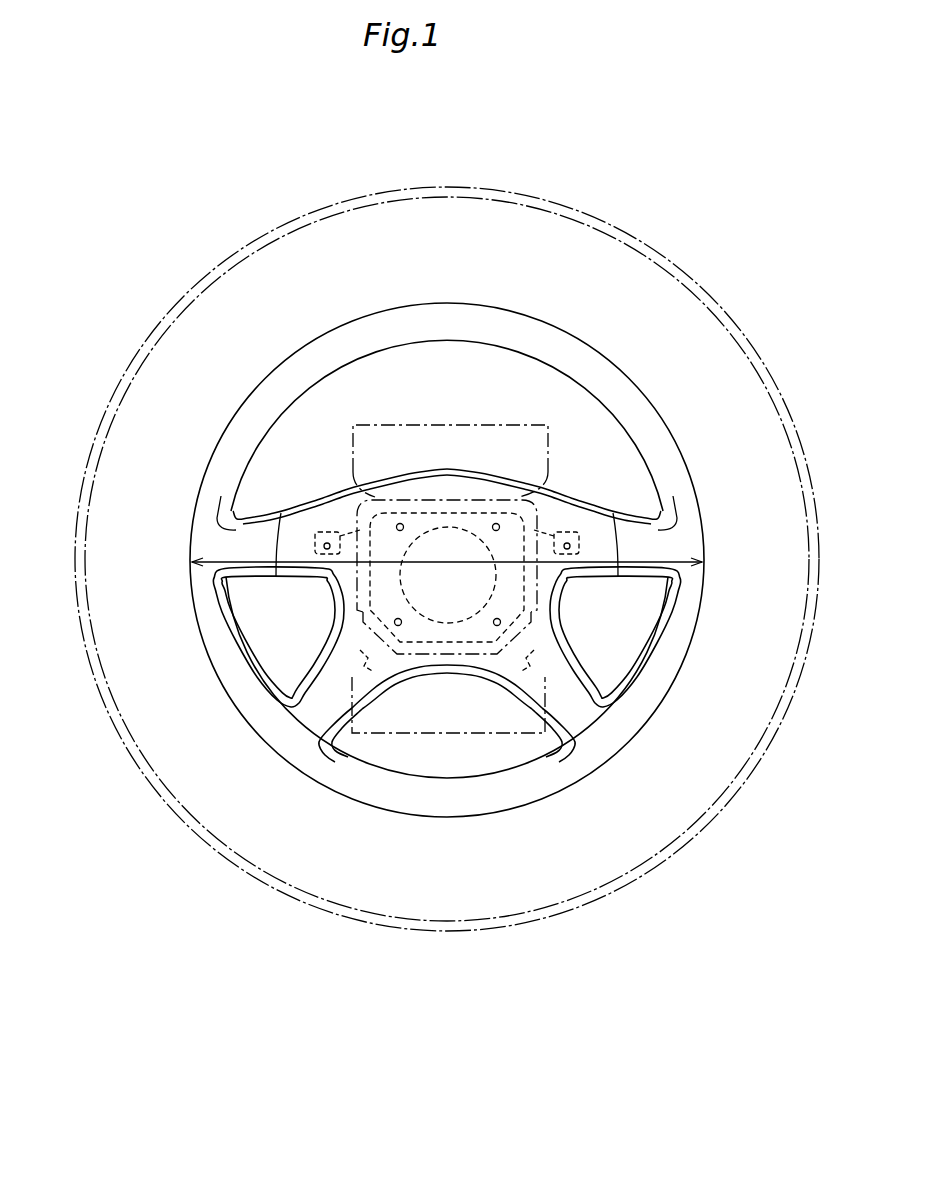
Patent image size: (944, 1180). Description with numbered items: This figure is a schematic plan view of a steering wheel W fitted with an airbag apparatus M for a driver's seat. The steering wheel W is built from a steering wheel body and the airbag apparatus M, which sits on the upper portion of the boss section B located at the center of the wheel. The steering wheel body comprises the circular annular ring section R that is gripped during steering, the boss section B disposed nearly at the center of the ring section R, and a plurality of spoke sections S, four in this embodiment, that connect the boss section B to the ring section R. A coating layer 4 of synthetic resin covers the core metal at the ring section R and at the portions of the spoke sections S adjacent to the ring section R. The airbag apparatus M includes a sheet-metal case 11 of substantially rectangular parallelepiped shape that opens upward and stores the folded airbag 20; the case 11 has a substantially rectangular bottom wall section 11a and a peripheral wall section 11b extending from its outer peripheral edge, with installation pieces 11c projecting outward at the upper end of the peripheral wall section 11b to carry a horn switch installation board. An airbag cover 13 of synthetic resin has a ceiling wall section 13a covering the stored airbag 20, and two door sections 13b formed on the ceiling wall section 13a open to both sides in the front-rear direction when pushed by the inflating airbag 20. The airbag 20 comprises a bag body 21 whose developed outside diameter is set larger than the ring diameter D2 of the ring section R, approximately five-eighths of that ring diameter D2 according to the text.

The steering wheel W is at (454, 607).
The ring section R is at (447, 511).
The coating layer 4 is at (462, 322).
The bag body 21 is at (663, 250).
The airbag 20 is at (447, 527).
The ring diameter D2 is at (686, 558).
The airbag apparatus M is at (486, 590).
The airbag cover 13 is at (486, 609).
The ceiling wall section 13a is at (563, 520).
The door sections 13b is at (455, 445).
The case 11 is at (445, 577).
The bottom wall section 11a is at (448, 638).
The peripheral wall section 11b is at (476, 448).
The installation pieces 11c is at (316, 542).
The boss section B is at (572, 490).
The spoke sections S is at (247, 580).